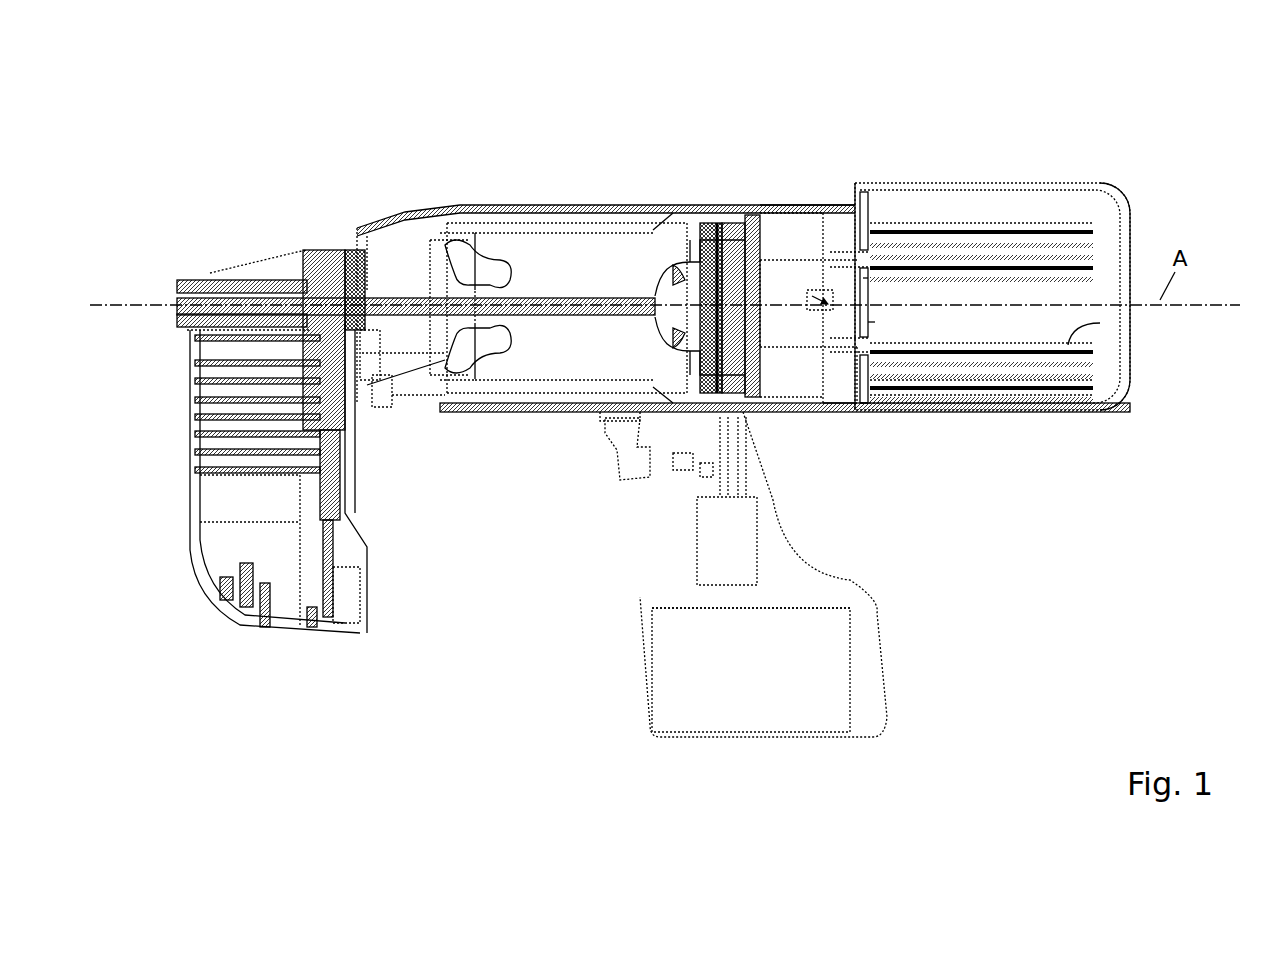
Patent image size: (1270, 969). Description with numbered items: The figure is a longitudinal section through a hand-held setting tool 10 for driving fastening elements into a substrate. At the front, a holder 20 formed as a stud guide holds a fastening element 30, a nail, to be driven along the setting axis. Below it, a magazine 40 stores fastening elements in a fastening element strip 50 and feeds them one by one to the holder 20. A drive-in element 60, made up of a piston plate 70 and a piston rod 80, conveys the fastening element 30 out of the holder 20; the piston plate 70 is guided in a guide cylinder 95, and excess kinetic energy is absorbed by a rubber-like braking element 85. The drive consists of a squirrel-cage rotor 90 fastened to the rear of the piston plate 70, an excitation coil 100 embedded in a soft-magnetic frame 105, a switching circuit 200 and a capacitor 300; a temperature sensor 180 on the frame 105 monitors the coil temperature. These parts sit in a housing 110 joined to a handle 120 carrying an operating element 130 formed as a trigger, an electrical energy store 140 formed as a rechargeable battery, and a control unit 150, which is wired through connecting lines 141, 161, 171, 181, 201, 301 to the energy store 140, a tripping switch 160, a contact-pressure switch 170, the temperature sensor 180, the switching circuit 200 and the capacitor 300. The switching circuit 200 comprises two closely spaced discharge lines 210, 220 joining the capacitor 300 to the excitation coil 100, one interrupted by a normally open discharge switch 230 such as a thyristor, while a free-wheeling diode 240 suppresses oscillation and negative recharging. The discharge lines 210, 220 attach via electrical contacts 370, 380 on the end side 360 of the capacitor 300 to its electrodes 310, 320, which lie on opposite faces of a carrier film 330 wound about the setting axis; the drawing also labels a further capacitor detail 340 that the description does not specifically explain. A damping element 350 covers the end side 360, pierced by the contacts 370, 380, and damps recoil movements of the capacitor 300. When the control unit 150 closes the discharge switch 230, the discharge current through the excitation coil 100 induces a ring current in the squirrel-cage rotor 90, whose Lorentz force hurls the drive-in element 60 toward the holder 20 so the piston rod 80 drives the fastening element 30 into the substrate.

The setting tool 10 is at (297, 112).
The holder 20 is at (203, 300).
The fastening element 30 is at (260, 300).
The magazine 40 is at (267, 497).
The fastening element strip 50 is at (347, 497).
The drive-in element 60 is at (605, 102).
The piston plate 70 is at (667, 270).
The piston rod 80 is at (575, 310).
The braking element 85 is at (468, 268).
The squirrel-cage rotor 90 is at (708, 235).
The guide cylinder 95 is at (520, 235).
The excitation coil 100 is at (735, 250).
The soft-magnetic frame 105 is at (733, 223).
The housing 110 is at (1085, 207).
The handle 120 is at (678, 527).
The operating element 130 is at (610, 433).
The electrical energy store 140 is at (687, 687).
The electrical connecting line 141 is at (728, 592).
The control unit 150 is at (722, 540).
The tripping switch 160 is at (703, 470).
The electrical connecting line 161 is at (707, 480).
The contact-pressure switch 170 is at (385, 395).
The electrical connecting line 171 is at (410, 405).
The temperature sensor 180 is at (768, 410).
The electrical connecting line 181 is at (748, 413).
The switching circuit 200 is at (823, 232).
The electrical connecting line 201 is at (810, 410).
The discharge line 210 is at (948, 385).
The discharge line 220 is at (1193, 321).
The discharge switch 230 is at (847, 410).
The free-wheeling diode 240 is at (870, 322).
The capacitor 300 is at (1033, 207).
The electrical connecting line 301 is at (905, 383).
The electrode 310 is at (1113, 200).
The electrode 320 is at (868, 278).
The carrier film 330 is at (1095, 250).
The lower heat exchanger plates 340 is at (1060, 383).
The damping element 350 is at (880, 395).
The end side 360 is at (785, 207).
The electrical contact 370 is at (850, 257).
The electrical contact 380 is at (1005, 390).